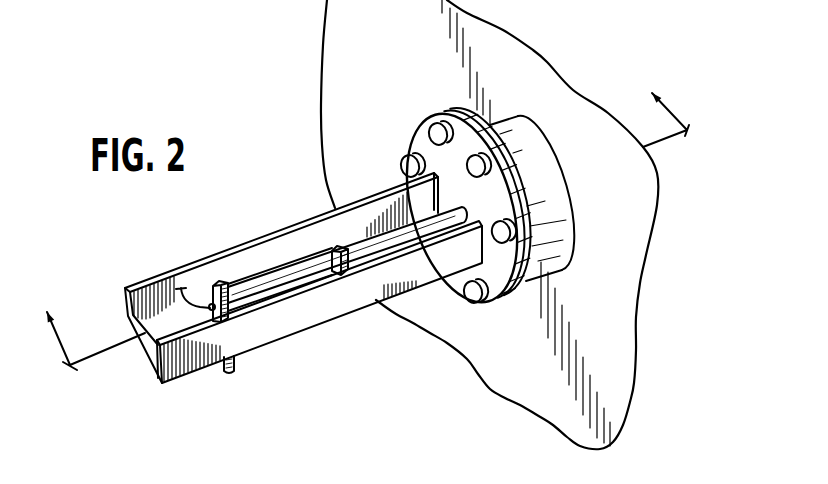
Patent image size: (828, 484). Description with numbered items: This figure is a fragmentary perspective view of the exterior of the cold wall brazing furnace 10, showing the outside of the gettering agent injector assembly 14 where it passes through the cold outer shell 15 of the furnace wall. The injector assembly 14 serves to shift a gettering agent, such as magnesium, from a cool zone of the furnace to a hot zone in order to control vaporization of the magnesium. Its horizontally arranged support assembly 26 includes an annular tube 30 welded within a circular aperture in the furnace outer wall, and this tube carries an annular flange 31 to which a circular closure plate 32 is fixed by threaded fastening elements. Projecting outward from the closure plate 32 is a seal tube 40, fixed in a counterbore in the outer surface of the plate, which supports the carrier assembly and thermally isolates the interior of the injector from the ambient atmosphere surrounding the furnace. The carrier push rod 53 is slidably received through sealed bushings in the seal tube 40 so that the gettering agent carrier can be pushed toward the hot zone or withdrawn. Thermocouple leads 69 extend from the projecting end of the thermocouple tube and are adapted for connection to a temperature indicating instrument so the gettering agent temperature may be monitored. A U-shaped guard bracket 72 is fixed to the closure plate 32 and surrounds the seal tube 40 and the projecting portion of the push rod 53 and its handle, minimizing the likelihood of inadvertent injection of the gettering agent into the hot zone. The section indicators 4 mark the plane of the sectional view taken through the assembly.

The section line 4- 4 is at (363, 215).
The cold wall brazing furnace 10 is at (229, 372).
The injector assembly 14 is at (292, 315).
The cold outer shell 15 is at (562, 377).
The support assembly 26 is at (427, 145).
The annular tube 30 is at (520, 143).
The annular flange 31 is at (535, 303).
The circular closure plate 32 is at (495, 292).
The seal tube 40 is at (385, 237).
The carrier push rod 53 is at (277, 287).
The thermocouple leads 69 is at (147, 286).
The U-shaped guard bracket 72 is at (285, 228).